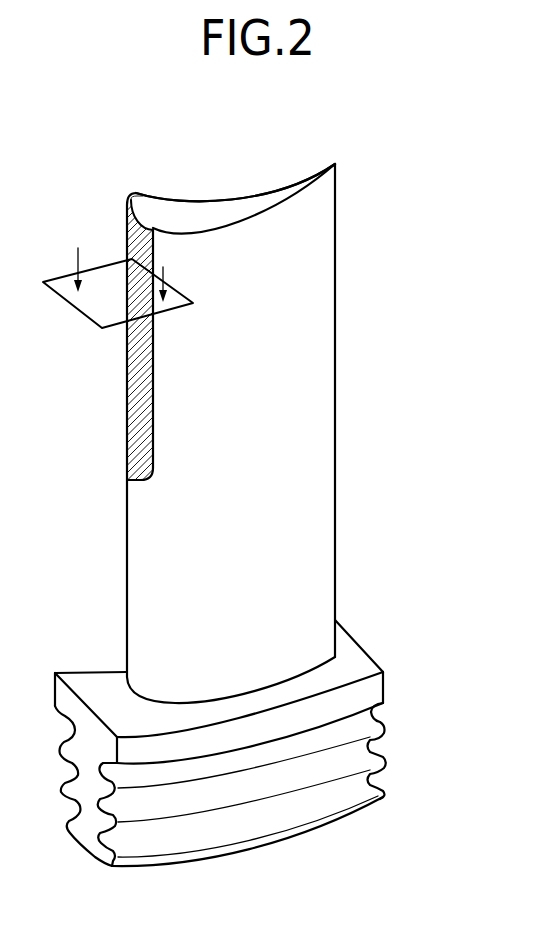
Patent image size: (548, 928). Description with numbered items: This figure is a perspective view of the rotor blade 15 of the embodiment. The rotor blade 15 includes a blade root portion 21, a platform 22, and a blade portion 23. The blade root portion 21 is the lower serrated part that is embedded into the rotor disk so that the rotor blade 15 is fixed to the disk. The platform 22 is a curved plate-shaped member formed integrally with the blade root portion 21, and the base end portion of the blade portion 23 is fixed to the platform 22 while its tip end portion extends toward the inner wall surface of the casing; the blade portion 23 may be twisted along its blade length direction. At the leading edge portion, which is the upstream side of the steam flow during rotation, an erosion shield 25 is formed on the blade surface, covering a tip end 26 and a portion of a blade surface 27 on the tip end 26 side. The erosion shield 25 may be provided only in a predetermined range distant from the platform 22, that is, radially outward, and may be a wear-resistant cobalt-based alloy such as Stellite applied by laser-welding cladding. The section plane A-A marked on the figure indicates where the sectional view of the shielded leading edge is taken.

The rotor blade 15 is at (106, 176).
The blade root portion 21 is at (381, 781).
The platform 22 is at (357, 668).
The blade portion 23 is at (322, 262).
The erosion shield 25 is at (137, 356).
The tip end 26 is at (127, 197).
The blade surface 27 is at (222, 236).